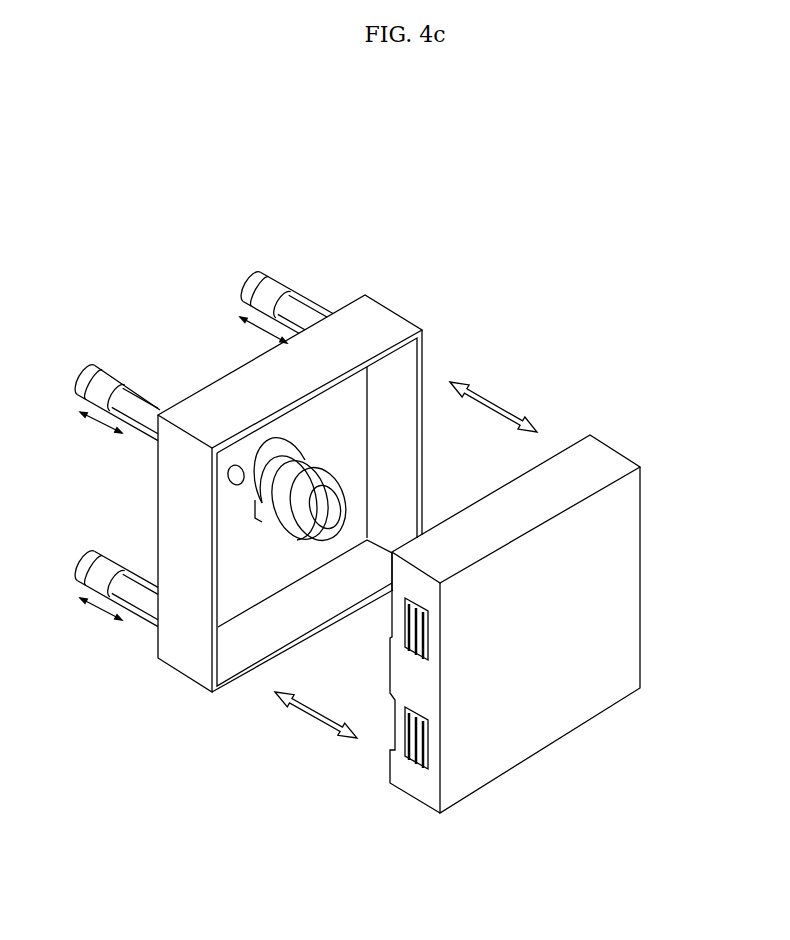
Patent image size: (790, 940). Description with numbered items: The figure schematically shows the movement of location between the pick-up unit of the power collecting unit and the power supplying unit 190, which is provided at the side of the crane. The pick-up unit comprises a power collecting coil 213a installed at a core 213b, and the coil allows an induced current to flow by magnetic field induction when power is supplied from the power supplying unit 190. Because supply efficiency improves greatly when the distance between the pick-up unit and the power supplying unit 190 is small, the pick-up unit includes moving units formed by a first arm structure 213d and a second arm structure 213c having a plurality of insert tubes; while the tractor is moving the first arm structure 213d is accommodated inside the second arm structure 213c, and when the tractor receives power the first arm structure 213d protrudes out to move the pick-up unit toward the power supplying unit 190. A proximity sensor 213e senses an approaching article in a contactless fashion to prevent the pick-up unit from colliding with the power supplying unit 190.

The power supplying unit 190 is at (543, 758).
The power collecting coil 213a is at (297, 540).
The core 213b is at (390, 317).
The second arm structure 213c is at (260, 280).
The first arm structure 213d is at (325, 316).
The proximity sensor 213e is at (233, 458).